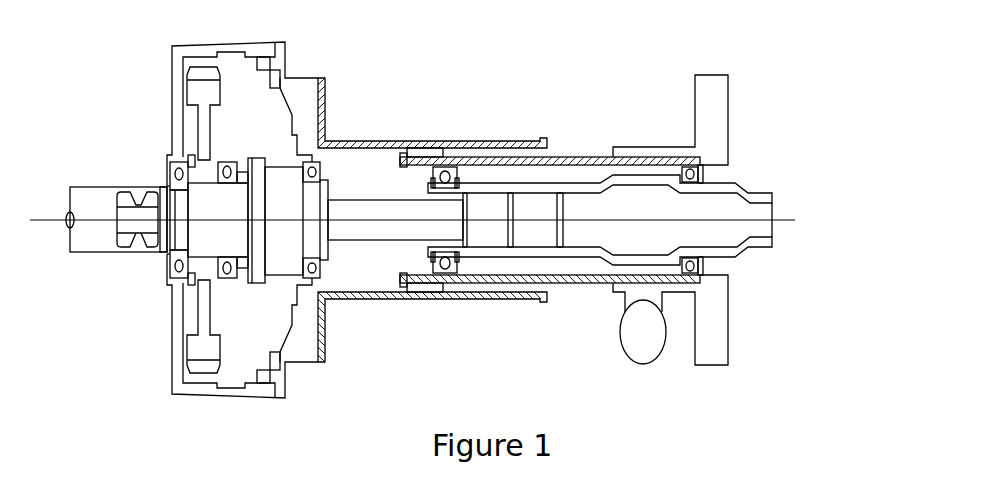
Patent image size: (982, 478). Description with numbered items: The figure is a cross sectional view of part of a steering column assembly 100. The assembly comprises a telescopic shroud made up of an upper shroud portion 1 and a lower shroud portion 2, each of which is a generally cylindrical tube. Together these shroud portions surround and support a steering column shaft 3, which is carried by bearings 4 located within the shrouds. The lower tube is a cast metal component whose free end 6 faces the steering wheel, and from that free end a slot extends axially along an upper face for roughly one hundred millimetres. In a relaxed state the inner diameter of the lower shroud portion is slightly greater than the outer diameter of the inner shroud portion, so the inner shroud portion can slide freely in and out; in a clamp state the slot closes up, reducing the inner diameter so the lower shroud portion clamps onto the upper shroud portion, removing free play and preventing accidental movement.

The steering column assembly 100 is at (496, 124).
The upper shroud portion 1 is at (565, 286).
The lower shroud portion 2 is at (455, 299).
The steering column shaft 3 is at (740, 188).
The bearings 4 is at (702, 178).
The free end 6 is at (542, 138).